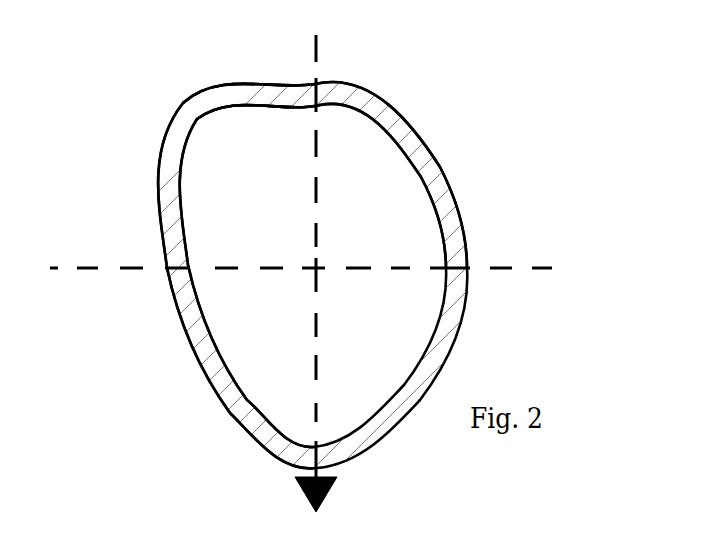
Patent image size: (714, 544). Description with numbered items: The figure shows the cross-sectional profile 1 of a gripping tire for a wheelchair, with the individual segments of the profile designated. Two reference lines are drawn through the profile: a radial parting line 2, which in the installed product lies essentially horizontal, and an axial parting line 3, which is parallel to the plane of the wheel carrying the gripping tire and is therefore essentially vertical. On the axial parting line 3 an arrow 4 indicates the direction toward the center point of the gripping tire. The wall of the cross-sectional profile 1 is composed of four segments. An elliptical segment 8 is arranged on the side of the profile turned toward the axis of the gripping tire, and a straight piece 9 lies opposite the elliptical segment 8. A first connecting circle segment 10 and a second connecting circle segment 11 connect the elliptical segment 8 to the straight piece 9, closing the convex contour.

The cross-sectional profile 1 is at (433, 102).
The radial parting line 2 is at (308, 280).
The axial parting line 3 is at (324, 228).
The arrow toward center point 4 is at (318, 480).
The elliptical segment 8 is at (202, 358).
The straight piece 9 is at (266, 98).
The first connecting circle segment 10 is at (178, 123).
The second connecting circle segment 11 is at (435, 165).